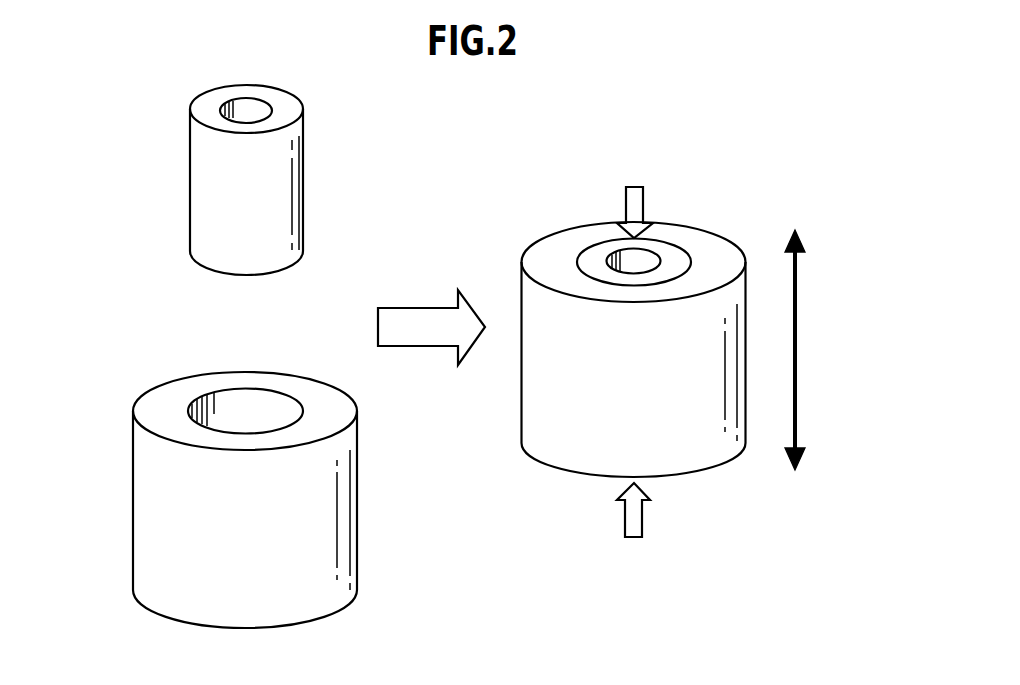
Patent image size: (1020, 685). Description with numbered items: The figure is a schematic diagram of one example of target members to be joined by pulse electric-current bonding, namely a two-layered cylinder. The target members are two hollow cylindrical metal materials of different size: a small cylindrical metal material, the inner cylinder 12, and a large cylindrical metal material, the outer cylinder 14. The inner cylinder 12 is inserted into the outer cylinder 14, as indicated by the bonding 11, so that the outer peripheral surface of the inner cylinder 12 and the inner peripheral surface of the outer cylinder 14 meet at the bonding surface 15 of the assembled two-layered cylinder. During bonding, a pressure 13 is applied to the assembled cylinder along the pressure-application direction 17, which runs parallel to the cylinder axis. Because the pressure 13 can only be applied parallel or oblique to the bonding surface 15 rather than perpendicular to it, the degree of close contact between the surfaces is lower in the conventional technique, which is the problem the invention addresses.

The bonding 11 is at (408, 308).
The inner cylinder 12 is at (190, 168).
The pressure 13 is at (634, 187).
The outer cylinder 14 is at (133, 455).
The bonding surface 15 is at (678, 245).
The pressure-application direction 17 is at (797, 355).